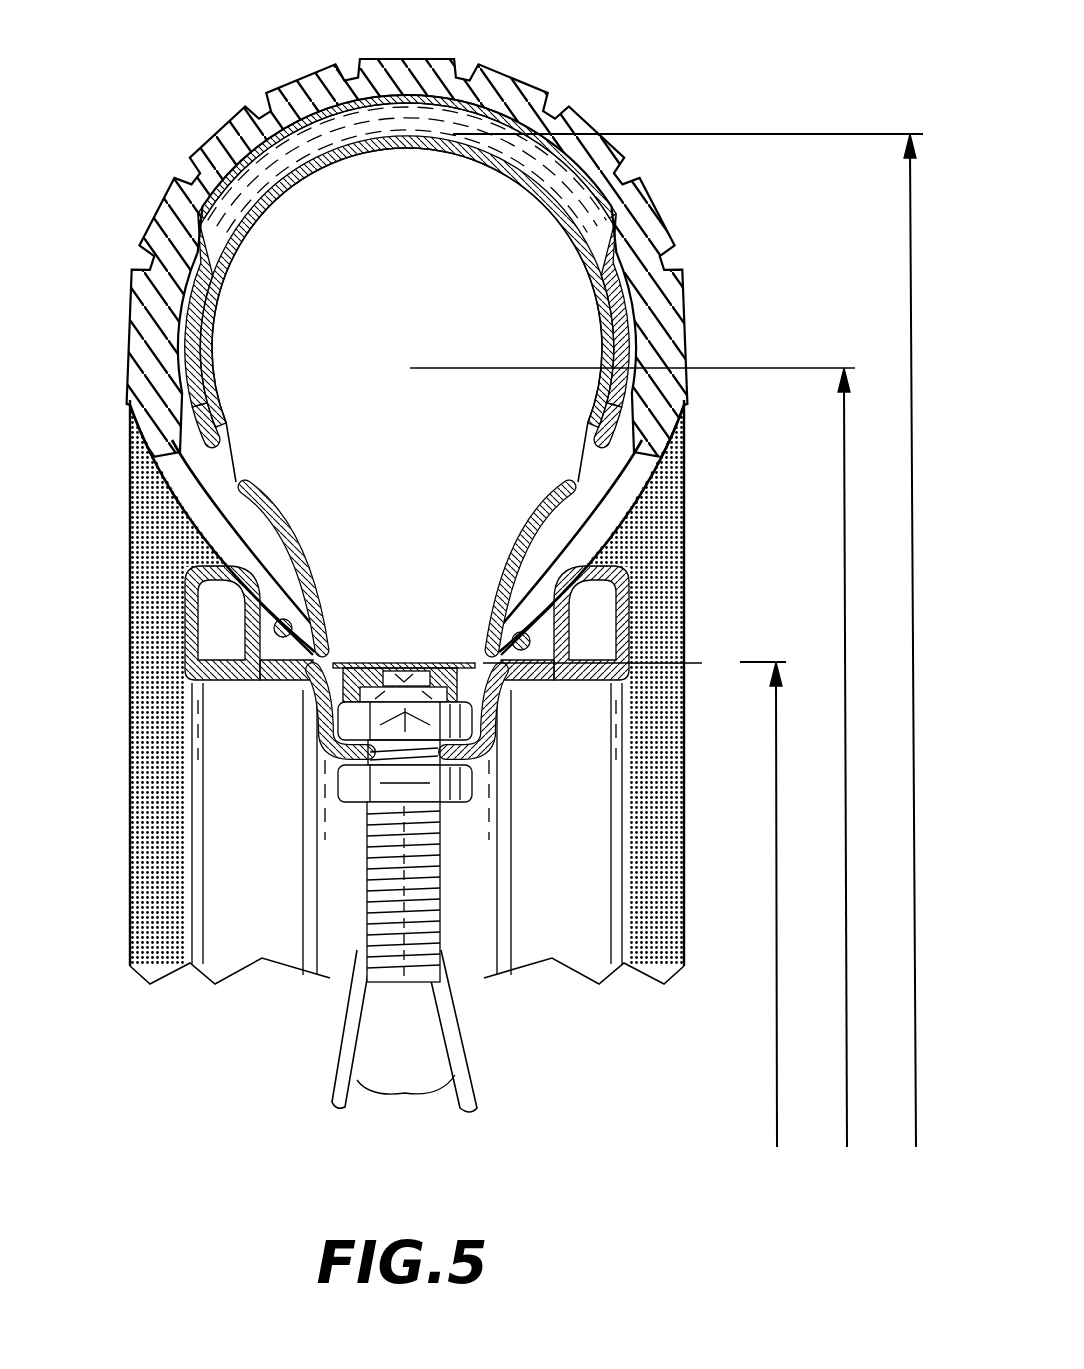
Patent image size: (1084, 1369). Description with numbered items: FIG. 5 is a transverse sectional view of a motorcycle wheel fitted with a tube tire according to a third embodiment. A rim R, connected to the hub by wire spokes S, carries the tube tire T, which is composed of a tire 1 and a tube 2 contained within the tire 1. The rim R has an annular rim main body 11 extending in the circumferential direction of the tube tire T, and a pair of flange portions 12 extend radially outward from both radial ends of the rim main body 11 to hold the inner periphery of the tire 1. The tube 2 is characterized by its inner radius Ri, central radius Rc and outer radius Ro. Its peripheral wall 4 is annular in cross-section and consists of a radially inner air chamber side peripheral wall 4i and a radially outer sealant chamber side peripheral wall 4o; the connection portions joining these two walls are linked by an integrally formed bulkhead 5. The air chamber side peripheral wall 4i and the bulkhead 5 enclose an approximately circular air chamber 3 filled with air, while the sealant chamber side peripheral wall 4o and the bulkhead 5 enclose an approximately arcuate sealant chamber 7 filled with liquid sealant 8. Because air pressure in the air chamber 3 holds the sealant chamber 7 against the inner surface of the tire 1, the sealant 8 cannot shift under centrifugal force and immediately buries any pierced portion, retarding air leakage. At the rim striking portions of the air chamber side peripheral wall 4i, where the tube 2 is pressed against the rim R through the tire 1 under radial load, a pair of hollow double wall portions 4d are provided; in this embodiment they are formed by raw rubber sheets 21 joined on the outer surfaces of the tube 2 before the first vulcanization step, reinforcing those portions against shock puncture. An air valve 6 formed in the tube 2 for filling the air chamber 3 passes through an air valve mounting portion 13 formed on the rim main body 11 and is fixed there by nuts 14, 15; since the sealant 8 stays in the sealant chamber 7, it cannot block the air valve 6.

The tube tire T is at (624, 113).
The tire 1 is at (680, 316).
The tube 2 is at (647, 373).
The air chamber 3 is at (428, 363).
The peripheral wall 4 is at (407, 351).
The sealant chamber side peripheral wall 4o is at (186, 348).
The air chamber side peripheral wall 4i is at (406, 445).
The double wall portions 4d is at (290, 521).
The bulkhead 5 is at (363, 142).
The air valve 6 is at (375, 890).
The sealant chamber 7 is at (497, 132).
The sealant 8 is at (425, 100).
The rim main body 11 is at (263, 684).
The flange portions 12 is at (225, 567).
The air valve mounting portion 13 is at (332, 750).
The nut 14 is at (470, 722).
The nut 15 is at (470, 790).
The raw rubber sheets 21 is at (309, 548).
The rim R is at (622, 632).
The outer radius Ro is at (706, 640).
The central radius Rc is at (864, 757).
The inner radius Ri is at (778, 904).
The wire spokes S is at (406, 1104).